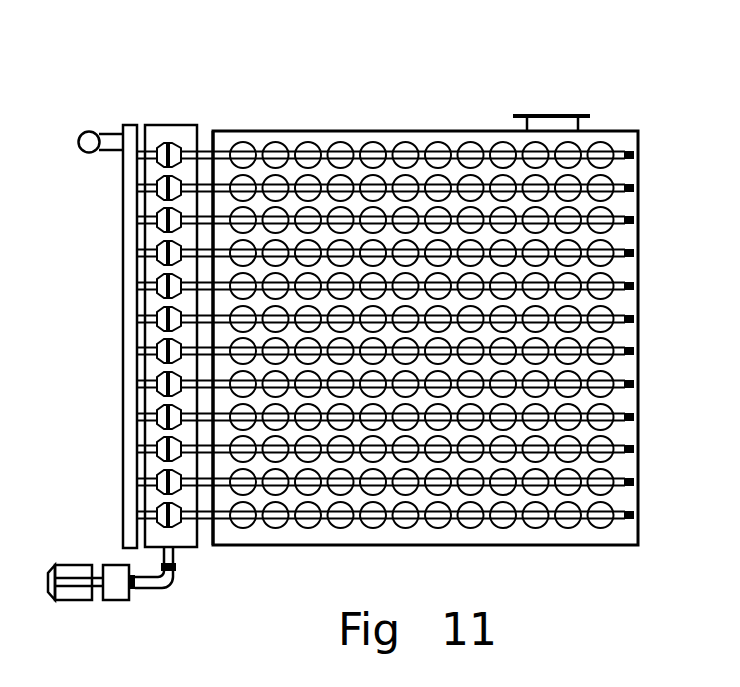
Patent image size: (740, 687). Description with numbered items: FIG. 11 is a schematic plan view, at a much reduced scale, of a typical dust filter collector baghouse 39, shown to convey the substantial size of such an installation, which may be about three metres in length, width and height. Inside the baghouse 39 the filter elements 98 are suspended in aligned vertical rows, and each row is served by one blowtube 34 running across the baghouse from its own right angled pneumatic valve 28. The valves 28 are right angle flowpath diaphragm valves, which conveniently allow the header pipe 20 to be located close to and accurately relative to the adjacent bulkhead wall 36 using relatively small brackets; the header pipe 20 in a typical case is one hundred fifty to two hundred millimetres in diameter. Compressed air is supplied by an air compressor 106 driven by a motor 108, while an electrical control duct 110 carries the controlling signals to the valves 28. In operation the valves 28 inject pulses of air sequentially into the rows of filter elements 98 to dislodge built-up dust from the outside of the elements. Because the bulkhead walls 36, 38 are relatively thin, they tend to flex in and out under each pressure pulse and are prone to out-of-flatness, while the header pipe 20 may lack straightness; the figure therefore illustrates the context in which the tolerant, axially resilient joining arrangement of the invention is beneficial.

The header pipe 20 is at (187, 546).
The right angled pneumatic valve 28 is at (172, 146).
The blowtube 34 is at (326, 152).
The bulkhead wall 36 is at (213, 142).
The bulkhead wall 38 is at (638, 138).
The dust filter collector baghouse 39 is at (410, 105).
The filter element 98 is at (440, 143).
The air compressor 106 is at (118, 600).
The motor 108 is at (67, 600).
The electrical control duct 110 is at (127, 125).